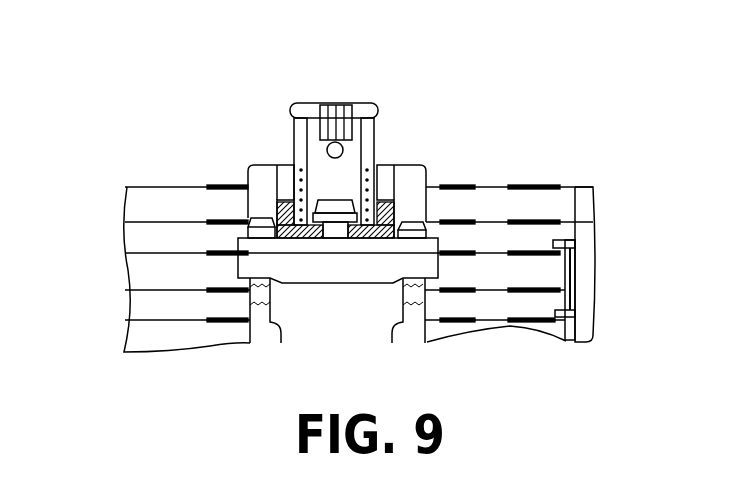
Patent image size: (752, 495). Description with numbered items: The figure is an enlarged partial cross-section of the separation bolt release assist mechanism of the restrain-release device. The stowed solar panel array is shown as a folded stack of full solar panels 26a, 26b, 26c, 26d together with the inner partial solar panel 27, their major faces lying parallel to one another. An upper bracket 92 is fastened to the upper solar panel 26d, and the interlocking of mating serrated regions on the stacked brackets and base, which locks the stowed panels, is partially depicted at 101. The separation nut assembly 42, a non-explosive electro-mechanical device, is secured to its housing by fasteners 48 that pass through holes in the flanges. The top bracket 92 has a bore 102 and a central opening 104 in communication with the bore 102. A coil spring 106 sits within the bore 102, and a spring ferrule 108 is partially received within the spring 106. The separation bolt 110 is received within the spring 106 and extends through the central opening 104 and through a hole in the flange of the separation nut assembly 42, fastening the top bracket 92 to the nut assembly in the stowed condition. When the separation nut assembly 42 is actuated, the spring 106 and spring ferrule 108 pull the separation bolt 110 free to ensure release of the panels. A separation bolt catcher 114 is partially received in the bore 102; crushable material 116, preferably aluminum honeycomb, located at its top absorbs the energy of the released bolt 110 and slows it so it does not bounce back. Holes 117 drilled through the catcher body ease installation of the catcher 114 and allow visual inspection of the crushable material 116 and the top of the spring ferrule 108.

The full solar panel 26a is at (548, 302).
The full solar panel 26b is at (557, 268).
The full solar panel 26c is at (582, 231).
The upper solar panel 26d is at (582, 203).
The inner partial solar panel 27 is at (553, 330).
The separation nut assembly 42 is at (433, 235).
The fasteners 48 is at (418, 223).
The upper bracket 92 is at (421, 163).
The serration engagement 101 is at (422, 363).
The bore 102 is at (348, 238).
The central opening 104 is at (323, 238).
The coil spring 106 is at (292, 168).
The spring ferrule 108 is at (375, 165).
The separation bolt 110 is at (304, 181).
The separation bolt catcher 114 is at (377, 110).
The crushable material 116 is at (337, 106).
The holes 117 is at (353, 140).